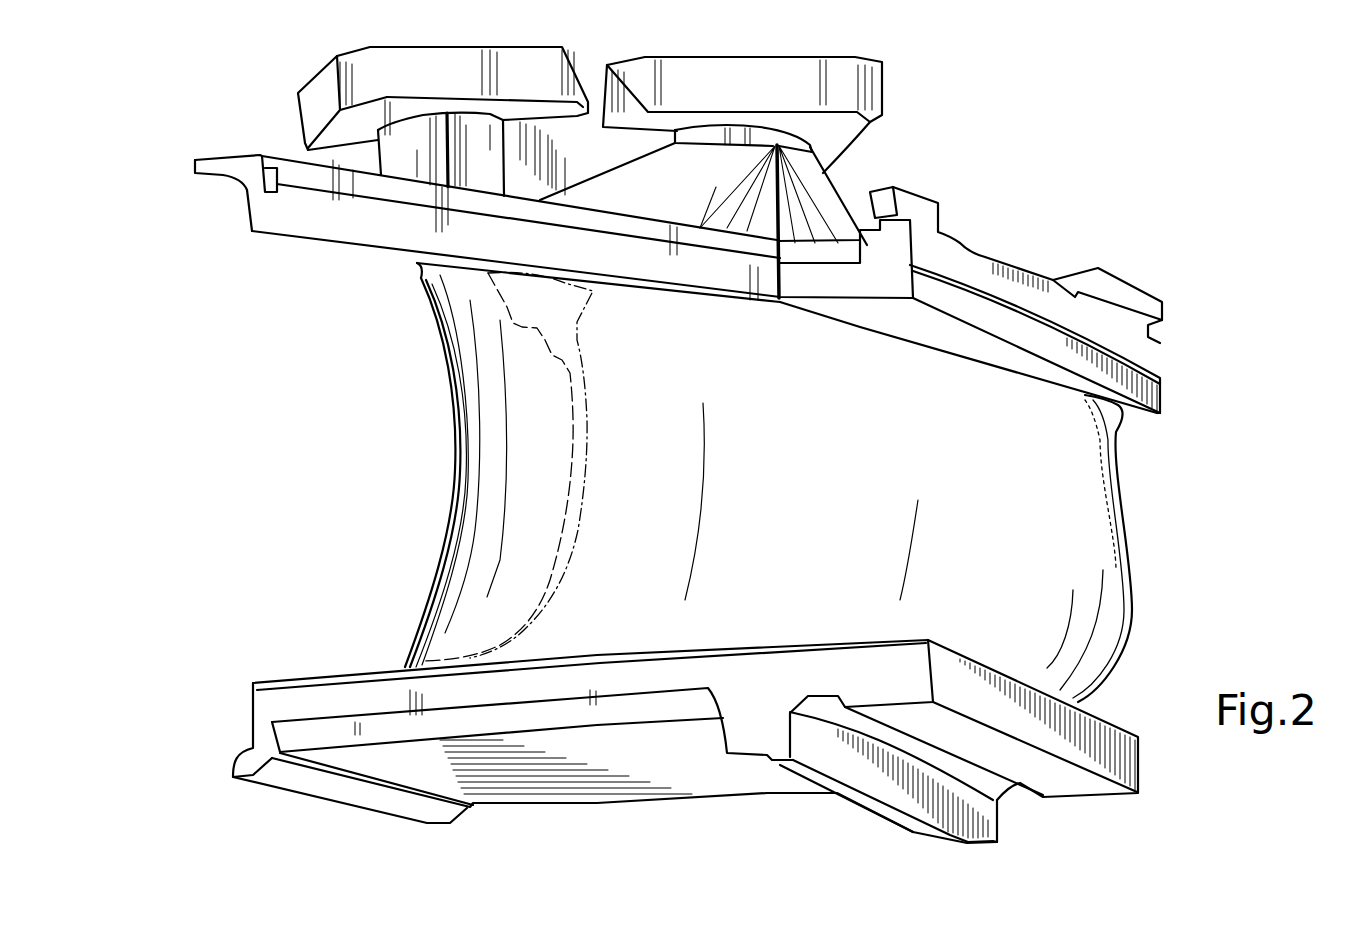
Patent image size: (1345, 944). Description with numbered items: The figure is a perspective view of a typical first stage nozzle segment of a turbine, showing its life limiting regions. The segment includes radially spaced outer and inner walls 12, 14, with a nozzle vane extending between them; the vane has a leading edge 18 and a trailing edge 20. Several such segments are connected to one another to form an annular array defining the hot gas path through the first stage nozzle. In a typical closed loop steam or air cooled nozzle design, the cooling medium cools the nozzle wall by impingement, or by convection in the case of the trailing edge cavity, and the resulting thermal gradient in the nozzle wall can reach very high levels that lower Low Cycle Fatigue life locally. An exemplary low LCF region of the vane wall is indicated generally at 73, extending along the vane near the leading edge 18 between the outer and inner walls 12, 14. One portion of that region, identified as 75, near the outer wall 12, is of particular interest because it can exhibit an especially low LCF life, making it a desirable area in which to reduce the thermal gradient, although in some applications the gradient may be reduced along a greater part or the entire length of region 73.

The outer wall 12 is at (345, 245).
The inner wall 14 is at (322, 666).
The leading edge 18 is at (427, 603).
The trailing edge 20 is at (1132, 563).
The low LCF region 73 is at (548, 523).
The portion of low LCF region 75 is at (486, 317).